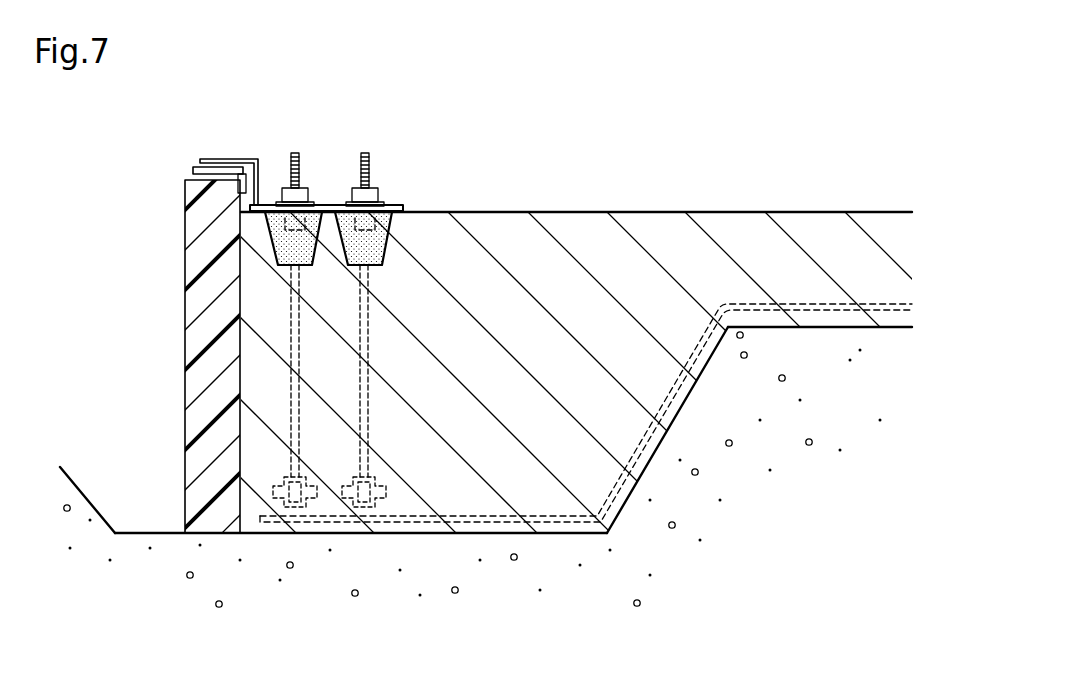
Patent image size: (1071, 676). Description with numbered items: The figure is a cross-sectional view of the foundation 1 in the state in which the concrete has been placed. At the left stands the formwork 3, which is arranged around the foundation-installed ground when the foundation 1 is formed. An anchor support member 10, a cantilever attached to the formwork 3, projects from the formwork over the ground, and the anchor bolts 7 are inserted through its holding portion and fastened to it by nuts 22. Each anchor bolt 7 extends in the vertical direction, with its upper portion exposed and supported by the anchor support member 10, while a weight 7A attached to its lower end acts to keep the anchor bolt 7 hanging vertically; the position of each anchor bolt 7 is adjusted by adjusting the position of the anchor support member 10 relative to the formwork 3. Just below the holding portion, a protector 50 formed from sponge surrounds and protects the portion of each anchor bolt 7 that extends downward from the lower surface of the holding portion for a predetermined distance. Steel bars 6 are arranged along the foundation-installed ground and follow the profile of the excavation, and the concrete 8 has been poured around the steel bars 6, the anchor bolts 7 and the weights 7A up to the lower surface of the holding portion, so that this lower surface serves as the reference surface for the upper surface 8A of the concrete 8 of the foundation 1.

The foundation 1 is at (515, 98).
The formwork 3 is at (184, 309).
The steel bars 6 is at (686, 372).
The anchor bolt 7 is at (370, 345).
The weight 7A is at (380, 488).
The concrete 8 is at (582, 226).
The upper surface of the concrete 8A is at (713, 210).
The anchor support member 10 is at (216, 140).
The nut 22 is at (378, 194).
The protector 50 is at (390, 226).